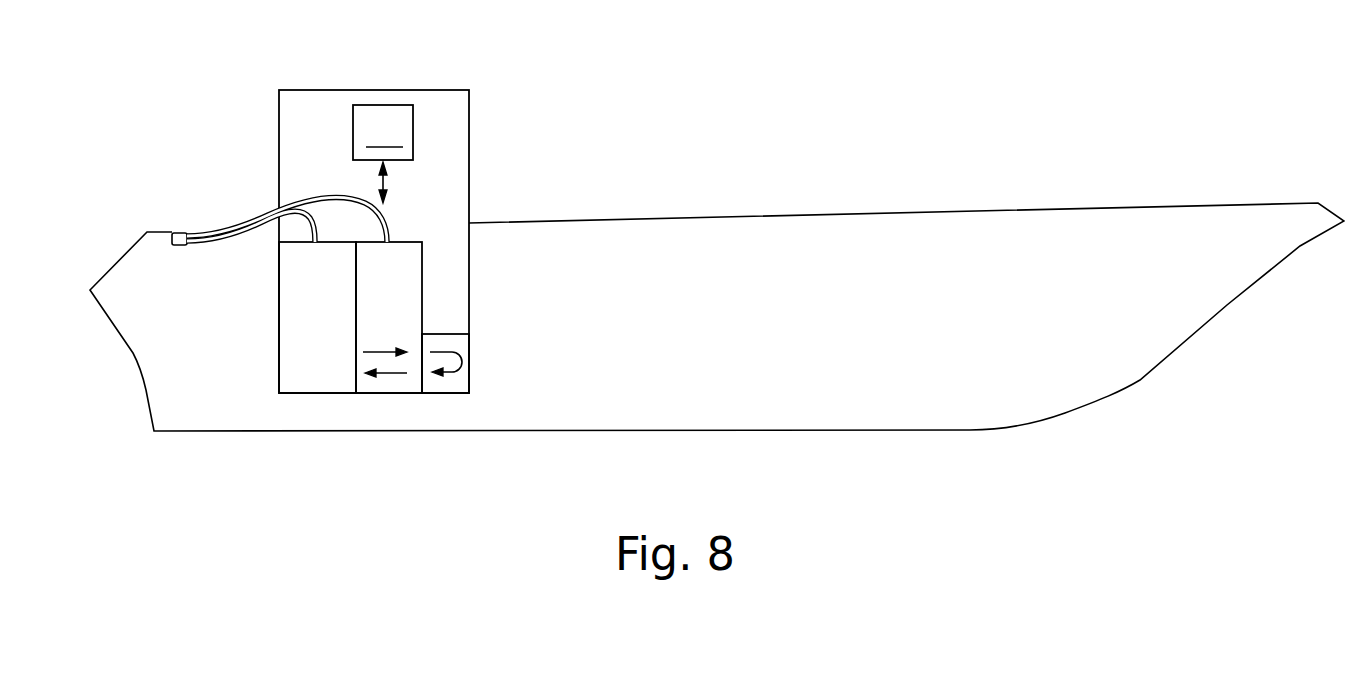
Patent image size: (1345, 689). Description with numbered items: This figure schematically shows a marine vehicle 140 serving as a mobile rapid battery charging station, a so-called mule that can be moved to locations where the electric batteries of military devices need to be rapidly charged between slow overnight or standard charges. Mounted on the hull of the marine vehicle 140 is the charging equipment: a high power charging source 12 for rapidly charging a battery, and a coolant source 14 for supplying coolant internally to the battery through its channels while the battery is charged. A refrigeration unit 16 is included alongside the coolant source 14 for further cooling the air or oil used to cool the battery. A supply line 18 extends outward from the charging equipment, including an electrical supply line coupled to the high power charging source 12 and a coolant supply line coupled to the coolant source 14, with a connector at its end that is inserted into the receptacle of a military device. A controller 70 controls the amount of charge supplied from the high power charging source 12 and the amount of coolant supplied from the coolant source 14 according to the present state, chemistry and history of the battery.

The high power charging source 12 is at (333, 306).
The coolant source 14 is at (405, 306).
The refrigeration unit 16 is at (428, 333).
The supply line 18 is at (240, 190).
The controller 70 is at (383, 154).
The marine vehicle 140 is at (764, 103).